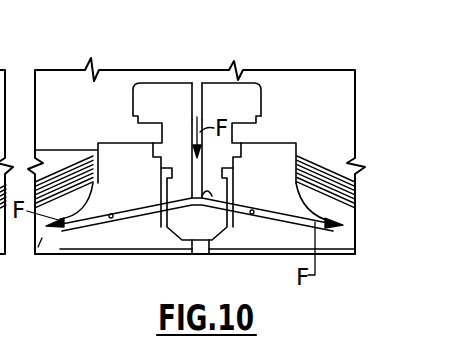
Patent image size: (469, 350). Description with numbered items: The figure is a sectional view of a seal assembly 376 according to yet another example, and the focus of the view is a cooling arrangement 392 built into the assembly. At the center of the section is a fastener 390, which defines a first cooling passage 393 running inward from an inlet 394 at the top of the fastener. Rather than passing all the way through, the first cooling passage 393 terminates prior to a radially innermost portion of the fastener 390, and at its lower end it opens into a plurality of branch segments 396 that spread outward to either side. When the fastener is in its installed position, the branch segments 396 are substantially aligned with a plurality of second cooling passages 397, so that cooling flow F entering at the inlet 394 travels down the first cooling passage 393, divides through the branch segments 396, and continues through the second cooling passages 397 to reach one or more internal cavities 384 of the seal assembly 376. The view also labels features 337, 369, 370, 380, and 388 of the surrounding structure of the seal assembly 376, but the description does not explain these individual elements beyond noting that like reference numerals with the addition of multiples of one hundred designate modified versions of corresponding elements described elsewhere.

The inner wall 337 is at (343, 118).
The lattice vent 369 is at (54, 177).
The base plate 370 is at (38, 255).
The seal assembly 376 is at (358, 49).
The upper body 380 is at (122, 125).
The internal cavities 384 is at (58, 247).
The side channel 388 is at (162, 173).
The fastener 390 is at (245, 82).
The cooling arrangement 392 is at (276, 56).
The first cooling passage 393 is at (198, 96).
The inlet 394 is at (198, 82).
The branch segments 396 is at (205, 192).
The second cooling passages 397 is at (114, 216).